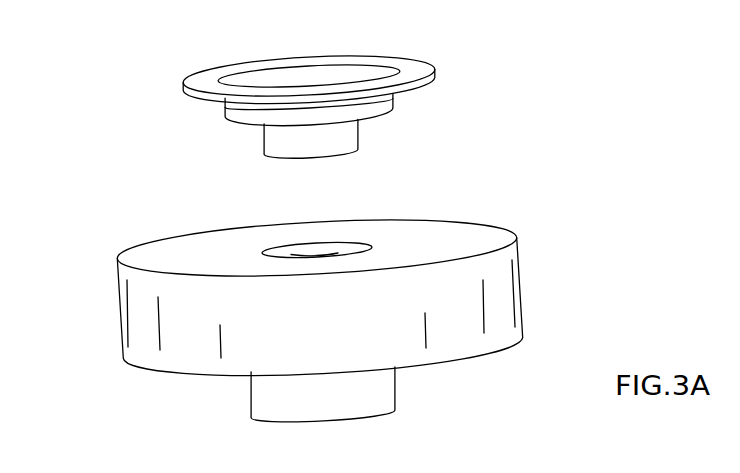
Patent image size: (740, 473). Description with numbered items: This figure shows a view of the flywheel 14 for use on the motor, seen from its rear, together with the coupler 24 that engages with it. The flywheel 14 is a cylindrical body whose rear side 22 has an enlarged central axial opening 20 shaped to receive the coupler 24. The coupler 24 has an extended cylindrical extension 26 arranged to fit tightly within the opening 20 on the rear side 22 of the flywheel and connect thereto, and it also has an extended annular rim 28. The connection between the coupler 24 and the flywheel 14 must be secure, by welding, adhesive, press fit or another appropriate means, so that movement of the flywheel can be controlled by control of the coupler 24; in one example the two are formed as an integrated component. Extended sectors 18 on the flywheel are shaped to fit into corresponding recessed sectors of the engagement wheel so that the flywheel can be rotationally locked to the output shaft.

The flywheel 14 is at (273, 274).
The extended sectors 18 is at (273, 397).
The central axial opening 20 is at (343, 248).
The rear side 22 is at (202, 258).
The coupler 24 is at (243, 116).
The cylindrical extension 26 is at (273, 143).
The annular rim 28 is at (207, 82).